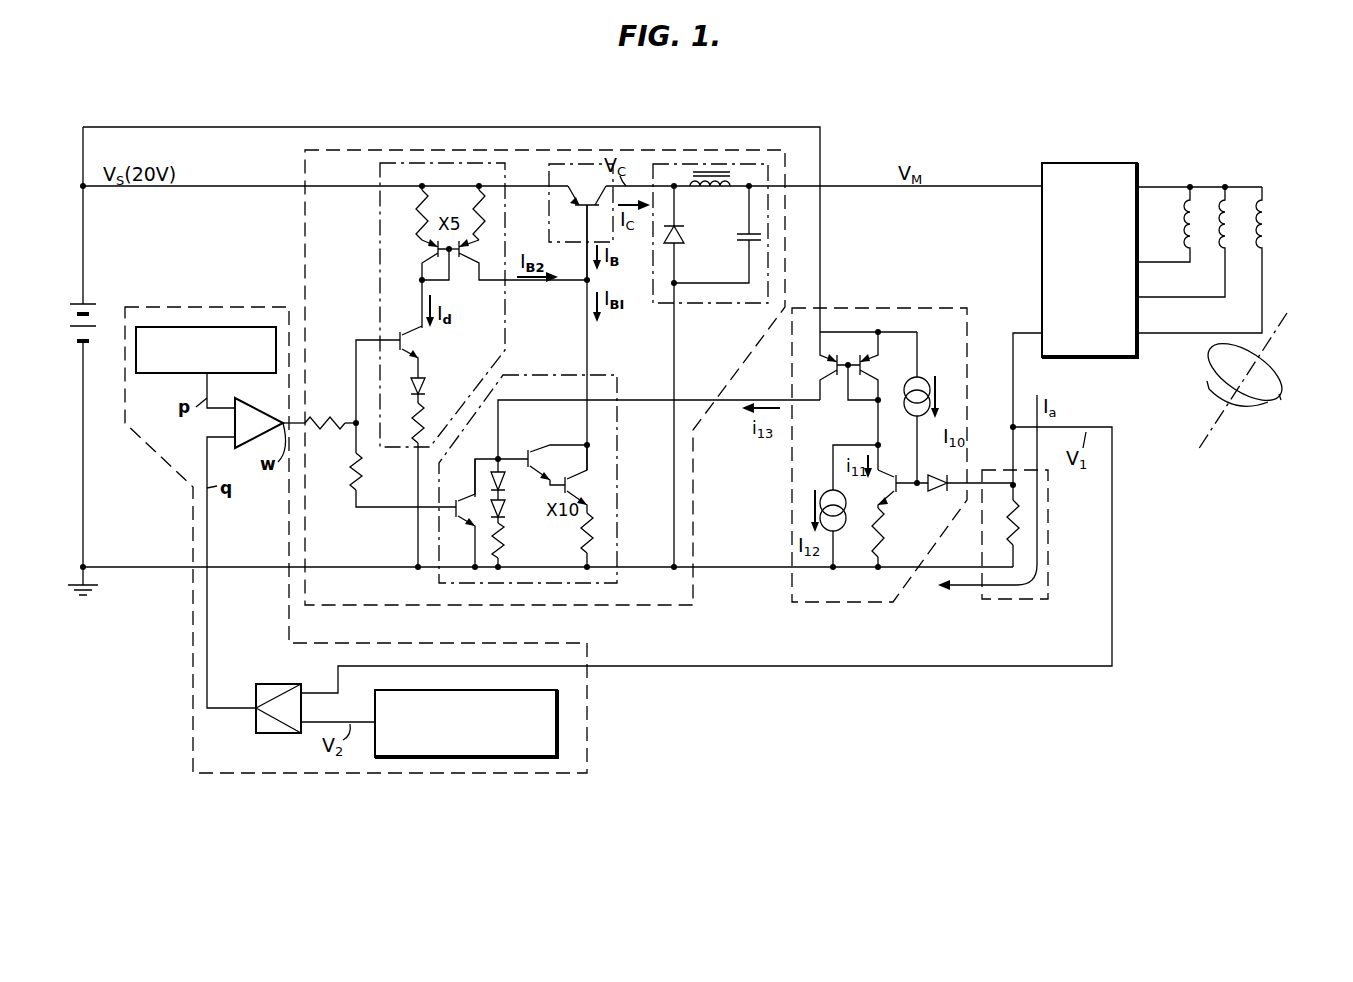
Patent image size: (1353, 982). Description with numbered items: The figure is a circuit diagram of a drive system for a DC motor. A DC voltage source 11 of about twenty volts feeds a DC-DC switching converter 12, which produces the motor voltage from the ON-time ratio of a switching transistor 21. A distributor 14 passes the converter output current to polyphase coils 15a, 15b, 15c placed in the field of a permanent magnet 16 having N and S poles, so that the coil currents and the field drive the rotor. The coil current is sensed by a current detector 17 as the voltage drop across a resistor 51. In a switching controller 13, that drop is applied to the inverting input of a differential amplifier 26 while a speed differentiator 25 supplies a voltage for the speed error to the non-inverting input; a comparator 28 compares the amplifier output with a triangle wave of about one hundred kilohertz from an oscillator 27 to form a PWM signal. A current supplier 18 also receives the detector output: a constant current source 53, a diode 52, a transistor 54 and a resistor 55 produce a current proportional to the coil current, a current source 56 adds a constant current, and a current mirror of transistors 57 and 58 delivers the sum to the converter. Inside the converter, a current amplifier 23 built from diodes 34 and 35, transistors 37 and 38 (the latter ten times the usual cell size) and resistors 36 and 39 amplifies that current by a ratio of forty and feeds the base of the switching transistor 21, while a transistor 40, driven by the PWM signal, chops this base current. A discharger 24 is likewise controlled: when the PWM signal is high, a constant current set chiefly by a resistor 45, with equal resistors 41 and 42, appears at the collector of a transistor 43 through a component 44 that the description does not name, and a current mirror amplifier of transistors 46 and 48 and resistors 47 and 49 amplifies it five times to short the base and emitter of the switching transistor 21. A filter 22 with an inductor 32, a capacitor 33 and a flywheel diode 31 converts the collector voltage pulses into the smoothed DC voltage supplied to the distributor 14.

The DC voltage source 11 is at (74, 332).
The DC-DC switching converter 12 is at (435, 148).
The switching controller 13 is at (360, 775).
The distributor 14 is at (1082, 163).
The polyphase coil 15a is at (1268, 245).
The polyphase coil 15b is at (1230, 195).
The polyphase coil 15c is at (1200, 252).
The permanent magnet 16 is at (1262, 405).
The current detector 17 is at (1030, 600).
The current supplier 18 is at (893, 600).
The switching transistor 21 is at (548, 210).
The filter 22 is at (692, 304).
The current amplifier 23 is at (617, 432).
The discharger 24 is at (380, 218).
The speed differentiator 25 is at (385, 690).
The differential amplifier 26 is at (293, 684).
The oscillator 27 is at (175, 373).
The comparator 28 is at (272, 398).
The flywheel diode 31 is at (684, 238).
The inductor 32 is at (712, 192).
The capacitor 33 is at (740, 244).
The diode 34 is at (505, 481).
The diode 35 is at (505, 509).
The resistor 36 is at (505, 541).
The transistor 37 is at (538, 450).
The transistor 38 is at (569, 485).
The resistor 39 is at (594, 542).
The transistor 40 is at (465, 522).
The resistor 41 is at (327, 415).
The resistor 42 is at (350, 480).
The transistor 43 is at (415, 350).
The diode 44 is at (426, 386).
The resistor 45 is at (412, 432).
The transistor 46 is at (424, 258).
The resistor 47 is at (405, 215).
The transistor 48 is at (473, 278).
The resistor 49 is at (490, 228).
The resistor 51 is at (1007, 530).
The diode 52 is at (945, 495).
The constant current source 53 is at (926, 380).
The transistor 54 is at (887, 495).
The resistor 55 is at (886, 545).
The current source 56 is at (840, 530).
The transistor 57 is at (864, 368).
The transistor 58 is at (832, 380).